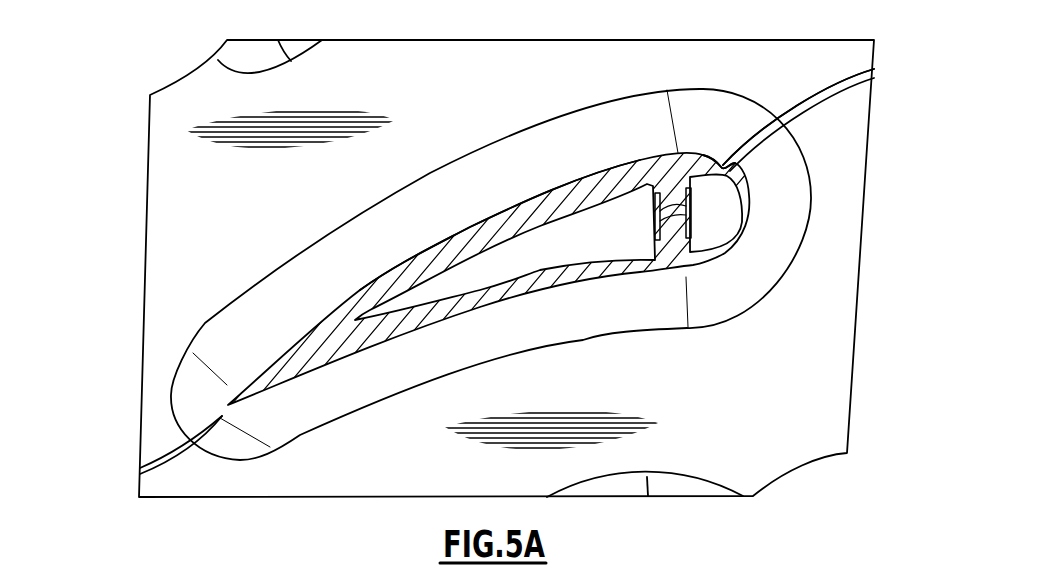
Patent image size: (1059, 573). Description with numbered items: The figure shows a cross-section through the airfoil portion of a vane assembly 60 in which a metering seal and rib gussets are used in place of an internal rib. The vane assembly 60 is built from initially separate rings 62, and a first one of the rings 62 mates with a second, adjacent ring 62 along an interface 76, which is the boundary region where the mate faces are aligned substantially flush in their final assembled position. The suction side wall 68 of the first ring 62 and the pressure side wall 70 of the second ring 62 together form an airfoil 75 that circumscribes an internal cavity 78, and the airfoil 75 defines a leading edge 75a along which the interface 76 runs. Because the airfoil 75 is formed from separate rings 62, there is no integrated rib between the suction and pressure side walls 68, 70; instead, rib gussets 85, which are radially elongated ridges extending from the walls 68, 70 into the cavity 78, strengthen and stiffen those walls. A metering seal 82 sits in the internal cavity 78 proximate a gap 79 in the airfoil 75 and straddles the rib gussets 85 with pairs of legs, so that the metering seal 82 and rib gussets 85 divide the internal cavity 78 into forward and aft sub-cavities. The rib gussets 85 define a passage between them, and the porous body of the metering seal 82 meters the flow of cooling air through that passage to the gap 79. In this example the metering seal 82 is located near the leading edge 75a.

The vane assembly 60 is at (108, 457).
The ring 62 is at (847, 65).
The suction side wall 68 is at (470, 226).
The pressure side wall 70 is at (604, 282).
The airfoil 75 is at (527, 185).
The leading edge 75a is at (800, 177).
The interface 76 is at (788, 93).
The internal cavity 78 is at (555, 258).
The gap 79 is at (724, 150).
The metering seal 82 is at (638, 236).
The rib gussets 85 is at (700, 200).